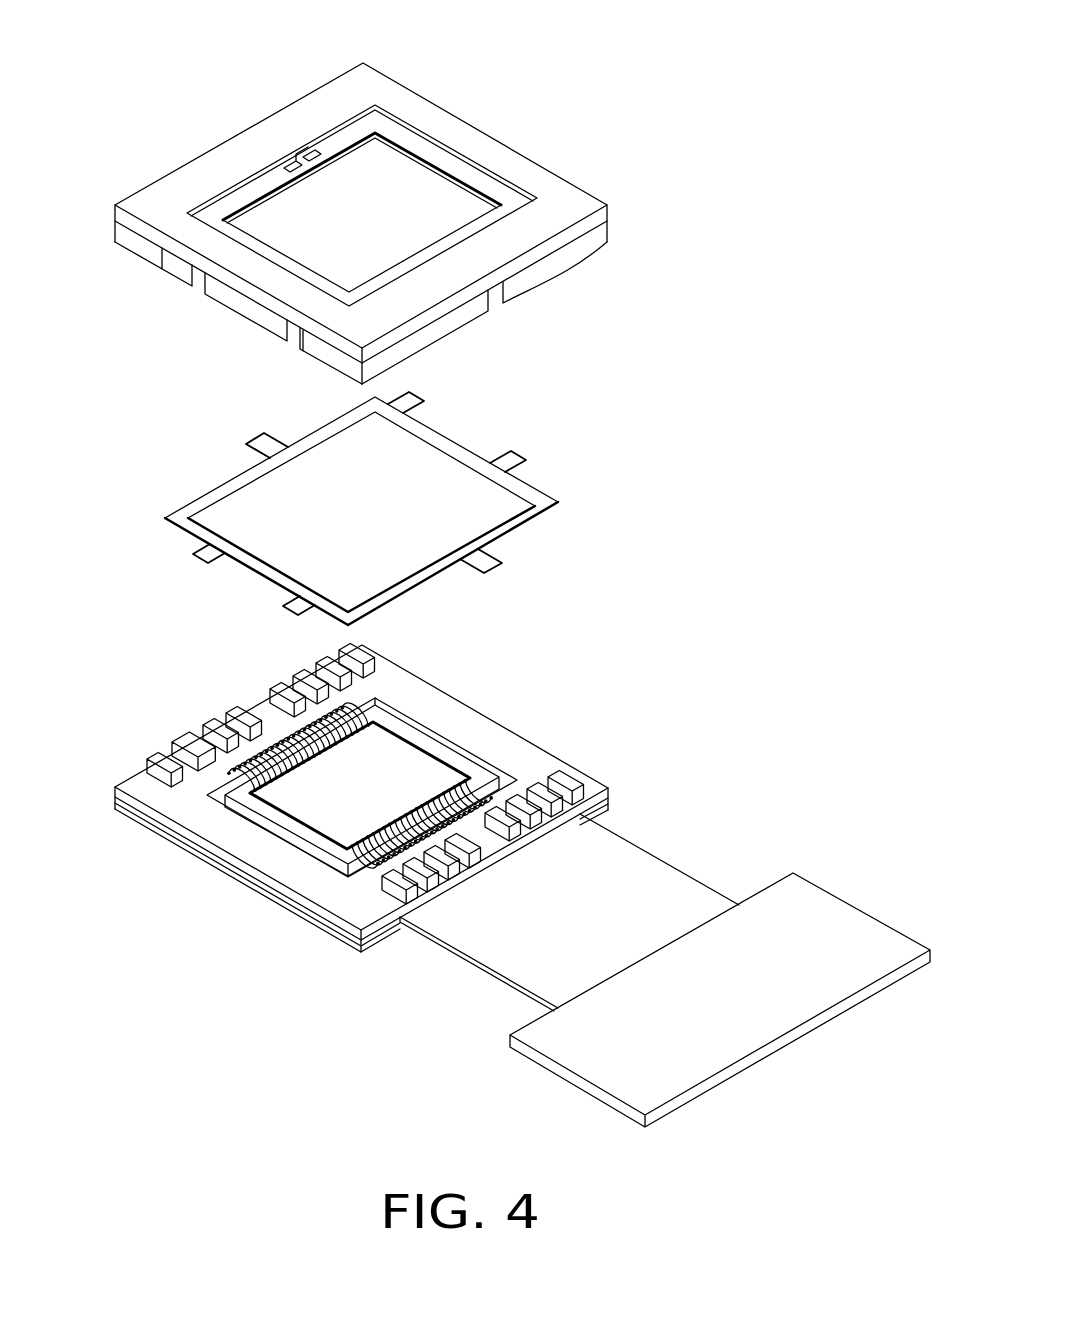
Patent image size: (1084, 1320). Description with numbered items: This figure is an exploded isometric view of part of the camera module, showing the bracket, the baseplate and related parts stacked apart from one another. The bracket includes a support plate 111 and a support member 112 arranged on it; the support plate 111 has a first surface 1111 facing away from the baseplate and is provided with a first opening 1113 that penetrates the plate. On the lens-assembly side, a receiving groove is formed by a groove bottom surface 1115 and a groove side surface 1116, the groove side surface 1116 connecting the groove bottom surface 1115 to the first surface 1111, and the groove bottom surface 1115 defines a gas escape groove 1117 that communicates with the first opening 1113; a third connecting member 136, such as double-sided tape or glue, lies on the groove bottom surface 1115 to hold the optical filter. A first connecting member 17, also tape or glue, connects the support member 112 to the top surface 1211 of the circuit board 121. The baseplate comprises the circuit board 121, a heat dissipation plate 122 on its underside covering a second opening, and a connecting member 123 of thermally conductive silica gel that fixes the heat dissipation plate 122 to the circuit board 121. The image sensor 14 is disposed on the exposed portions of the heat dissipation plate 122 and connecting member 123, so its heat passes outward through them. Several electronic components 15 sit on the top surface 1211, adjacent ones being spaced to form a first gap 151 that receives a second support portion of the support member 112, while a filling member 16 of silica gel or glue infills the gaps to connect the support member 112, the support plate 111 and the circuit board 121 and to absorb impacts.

The support plate 111 is at (357, 198).
The first surface 1111 is at (247, 145).
The first opening 1113 is at (386, 152).
The groove bottom surface 1115 is at (322, 147).
The groove side surface 1116 is at (502, 182).
The gas escape groove 1117 is at (297, 152).
The third connecting member 136 is at (383, 128).
The filling member 16 is at (145, 248).
The support member 112 is at (200, 278).
The first connecting member 17 is at (540, 506).
The circuit board 121 is at (513, 886).
The top surface 1211 is at (538, 767).
The heat dissipation plate 122 is at (282, 898).
The connecting member 123 is at (357, 944).
The image sensor 14 is at (410, 767).
The electronic components 15 is at (340, 774).
The first gap 151 is at (228, 712).